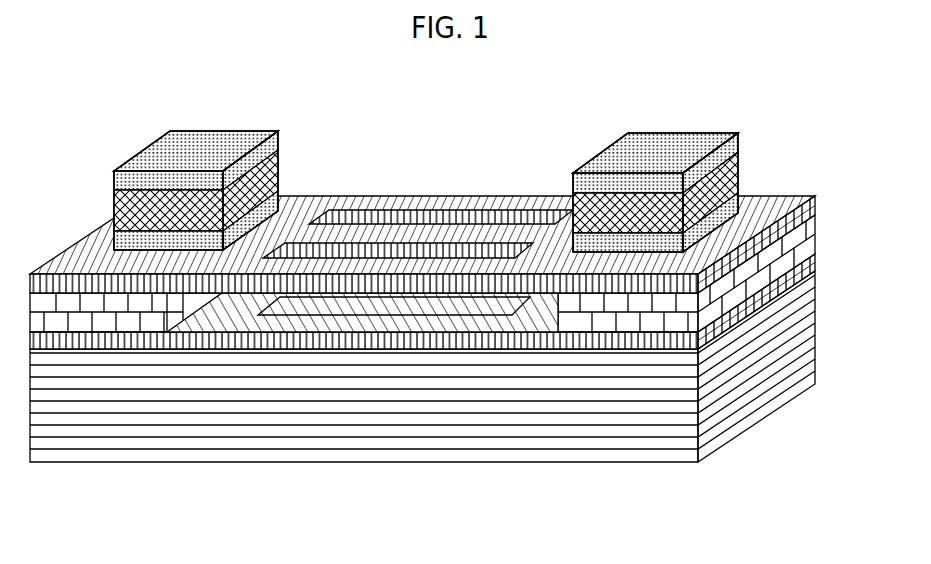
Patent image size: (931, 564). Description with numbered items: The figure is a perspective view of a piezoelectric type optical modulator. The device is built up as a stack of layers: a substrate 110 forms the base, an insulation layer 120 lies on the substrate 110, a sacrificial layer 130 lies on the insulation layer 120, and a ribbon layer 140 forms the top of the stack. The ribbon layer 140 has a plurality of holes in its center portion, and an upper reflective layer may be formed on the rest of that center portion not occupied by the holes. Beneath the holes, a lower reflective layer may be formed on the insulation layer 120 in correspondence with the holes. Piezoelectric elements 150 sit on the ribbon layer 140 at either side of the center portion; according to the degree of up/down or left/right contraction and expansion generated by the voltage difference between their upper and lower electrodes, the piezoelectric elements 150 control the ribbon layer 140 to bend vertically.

The substrate 110 is at (817, 338).
The insulation layer 120 is at (817, 263).
The sacrificial layer 130 is at (817, 231).
The ribbon layer 140 is at (817, 197).
The piezoelectric element 150 is at (740, 143).